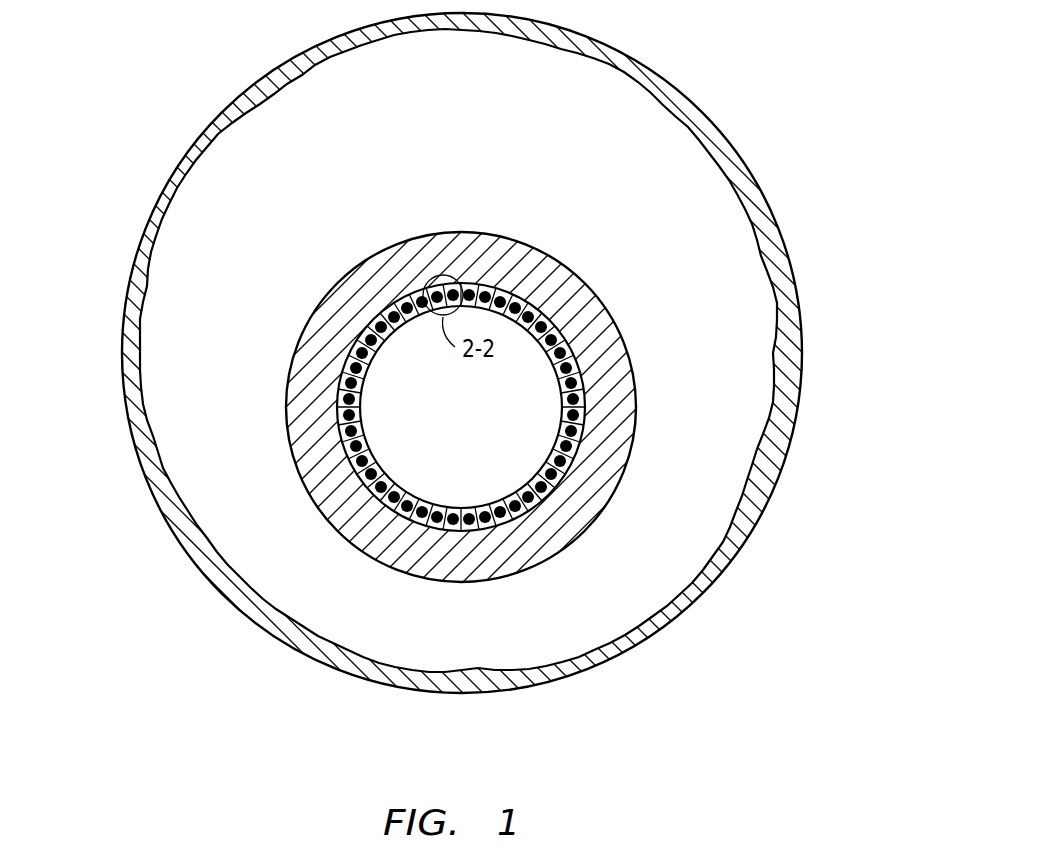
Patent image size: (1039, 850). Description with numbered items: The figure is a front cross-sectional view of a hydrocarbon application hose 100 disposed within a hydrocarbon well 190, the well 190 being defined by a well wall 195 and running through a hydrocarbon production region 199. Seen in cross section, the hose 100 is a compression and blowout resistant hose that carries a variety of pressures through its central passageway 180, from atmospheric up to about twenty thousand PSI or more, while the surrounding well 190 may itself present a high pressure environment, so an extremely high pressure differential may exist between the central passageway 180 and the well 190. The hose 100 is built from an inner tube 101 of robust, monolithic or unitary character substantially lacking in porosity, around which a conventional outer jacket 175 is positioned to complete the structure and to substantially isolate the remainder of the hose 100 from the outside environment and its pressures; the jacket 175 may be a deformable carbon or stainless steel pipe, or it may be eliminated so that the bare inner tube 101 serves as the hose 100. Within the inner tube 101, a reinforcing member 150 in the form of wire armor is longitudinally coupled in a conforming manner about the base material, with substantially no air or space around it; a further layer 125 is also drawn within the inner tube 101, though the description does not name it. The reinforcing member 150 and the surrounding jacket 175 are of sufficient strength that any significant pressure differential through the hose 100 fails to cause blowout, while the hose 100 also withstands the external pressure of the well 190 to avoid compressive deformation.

The hydrocarbon application hose 100 is at (480, 444).
The inner tube 101 is at (570, 458).
The insulation layer 125 is at (510, 513).
The reinforcing member 150 is at (473, 293).
The outer jacket 175 is at (582, 292).
The central passageway 180 is at (397, 387).
The hydrocarbon well 190 is at (599, 168).
The well wall 195 is at (275, 90).
The hydrocarbon production region 199 is at (785, 278).